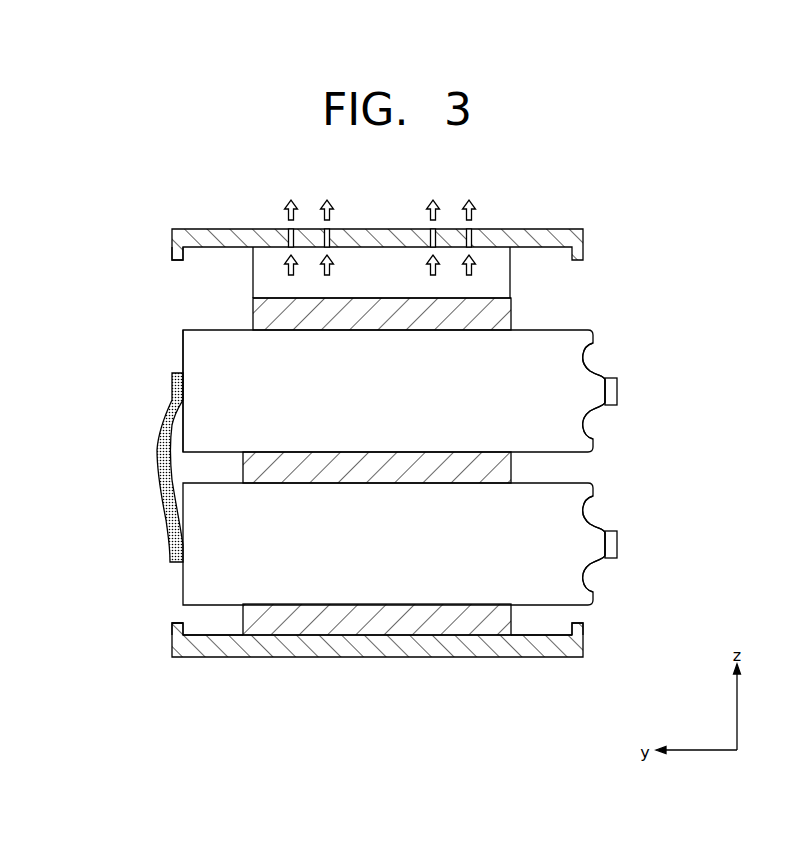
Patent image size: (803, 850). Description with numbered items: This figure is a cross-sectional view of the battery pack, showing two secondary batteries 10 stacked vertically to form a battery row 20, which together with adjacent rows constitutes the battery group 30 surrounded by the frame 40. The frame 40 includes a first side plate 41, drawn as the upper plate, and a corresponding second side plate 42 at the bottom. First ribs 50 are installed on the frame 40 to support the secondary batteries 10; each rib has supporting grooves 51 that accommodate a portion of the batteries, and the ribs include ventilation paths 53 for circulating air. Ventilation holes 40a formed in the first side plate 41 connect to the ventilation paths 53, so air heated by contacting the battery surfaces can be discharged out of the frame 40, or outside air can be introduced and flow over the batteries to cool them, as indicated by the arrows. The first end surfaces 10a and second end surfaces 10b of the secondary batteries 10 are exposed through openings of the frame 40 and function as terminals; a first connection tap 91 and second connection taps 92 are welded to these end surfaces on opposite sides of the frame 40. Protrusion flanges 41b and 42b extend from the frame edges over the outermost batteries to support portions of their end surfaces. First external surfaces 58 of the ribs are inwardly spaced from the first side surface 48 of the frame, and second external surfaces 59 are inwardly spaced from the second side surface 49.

The secondary battery 10 is at (175, 359).
The first end surface 10a is at (183, 338).
The second end surface 10b is at (596, 362).
The battery row 20 is at (75, 345).
The battery group 30 is at (614, 420).
The frame 40 is at (340, 676).
The ventilation hole 40a is at (290, 228).
The first side plate 41 is at (331, 229).
The protrusion flange 41b is at (172, 259).
The second side plate 42 is at (392, 650).
The protrusion flange 42b is at (172, 623).
The first side surface 48 is at (172, 637).
The second side surface 49 is at (583, 645).
The first rib 50 is at (522, 317).
The supporting groove 51 is at (253, 316).
The ventilation path 53 is at (492, 297).
The first external surface 58 is at (243, 621).
The second external surface 59 is at (512, 622).
The first connection tap 91 is at (160, 484).
The second connection tap 92 is at (618, 391).